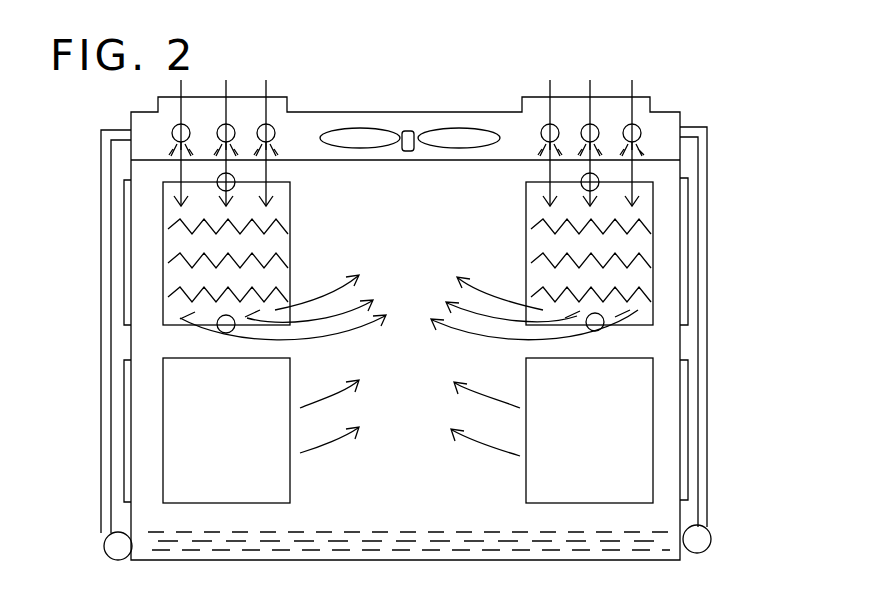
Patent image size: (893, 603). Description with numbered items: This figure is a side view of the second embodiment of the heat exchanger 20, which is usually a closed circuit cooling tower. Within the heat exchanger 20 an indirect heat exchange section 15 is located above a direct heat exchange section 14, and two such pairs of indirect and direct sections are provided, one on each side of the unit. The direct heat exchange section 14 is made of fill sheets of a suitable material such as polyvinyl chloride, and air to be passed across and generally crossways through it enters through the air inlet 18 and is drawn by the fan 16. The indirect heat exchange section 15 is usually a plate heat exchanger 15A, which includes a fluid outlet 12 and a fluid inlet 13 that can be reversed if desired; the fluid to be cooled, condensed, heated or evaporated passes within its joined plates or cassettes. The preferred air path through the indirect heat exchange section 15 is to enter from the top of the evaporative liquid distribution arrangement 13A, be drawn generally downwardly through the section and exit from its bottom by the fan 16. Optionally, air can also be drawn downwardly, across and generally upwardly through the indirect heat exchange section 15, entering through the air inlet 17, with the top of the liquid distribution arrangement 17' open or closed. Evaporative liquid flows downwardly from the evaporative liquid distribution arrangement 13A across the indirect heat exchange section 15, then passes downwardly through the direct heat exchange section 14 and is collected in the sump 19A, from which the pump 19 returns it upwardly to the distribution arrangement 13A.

The fluid outlet 12 is at (236, 176).
The fluid inlet 13 is at (226, 315).
The evaporative liquid distribution arrangement 13A is at (273, 136).
The direct heat exchange section 14 is at (290, 370).
The indirect heat exchange section 15 is at (292, 206).
The plate heat exchanger 15A is at (524, 207).
The fan 16 is at (462, 128).
The air inlet 17 is at (433, 330).
The liquid distribution arrangement top 17' is at (406, 104).
The air inlet 18 is at (692, 374).
The pump 19 is at (708, 535).
The sump 19A is at (350, 525).
The heat exchanger 20 is at (686, 100).